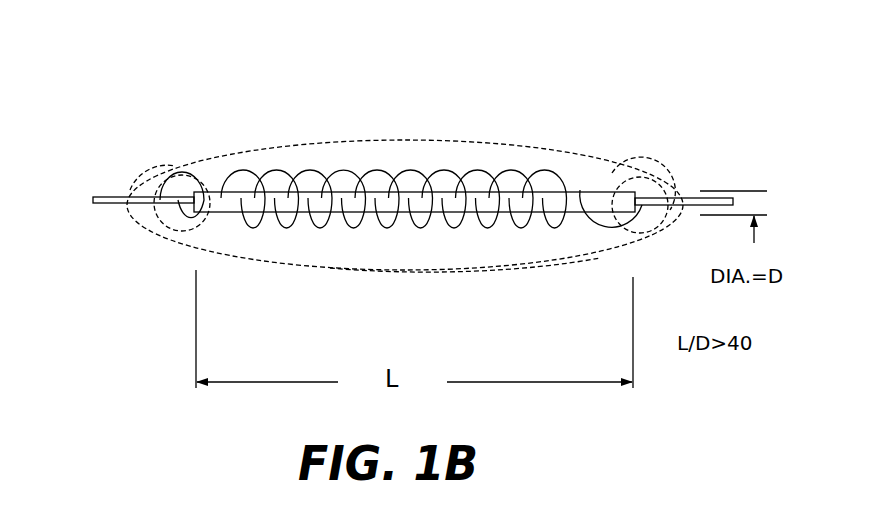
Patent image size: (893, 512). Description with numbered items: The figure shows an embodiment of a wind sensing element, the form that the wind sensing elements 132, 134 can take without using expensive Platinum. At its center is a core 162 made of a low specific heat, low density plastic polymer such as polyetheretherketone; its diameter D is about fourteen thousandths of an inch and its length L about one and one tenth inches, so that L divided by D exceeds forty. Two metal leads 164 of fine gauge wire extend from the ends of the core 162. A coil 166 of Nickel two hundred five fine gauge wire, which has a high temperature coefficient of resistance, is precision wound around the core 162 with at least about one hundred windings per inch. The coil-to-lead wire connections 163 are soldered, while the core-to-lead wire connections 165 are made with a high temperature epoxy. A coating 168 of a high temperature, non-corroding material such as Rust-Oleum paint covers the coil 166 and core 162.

The wind sensing element 132 is at (405, 163).
The wind sensing element 134 is at (405, 205).
The core 162 is at (241, 211).
The coil-to-lead wire connections 163 is at (170, 205).
The metal leads 164 is at (110, 197).
The core-to-lead wire connections 165 is at (640, 177).
The coil 166 is at (350, 172).
The coating 168 is at (560, 263).